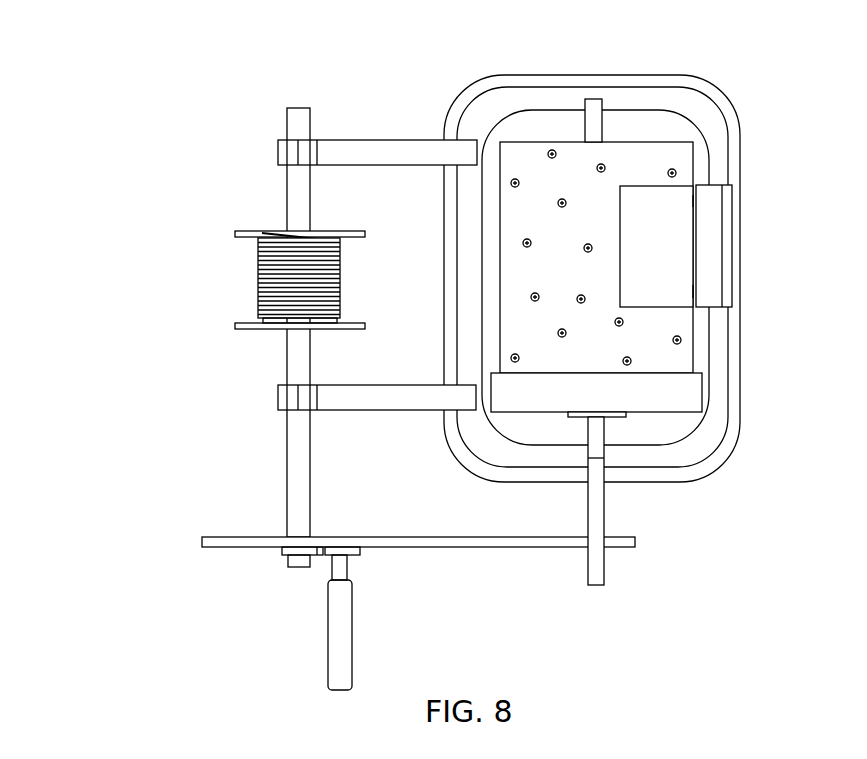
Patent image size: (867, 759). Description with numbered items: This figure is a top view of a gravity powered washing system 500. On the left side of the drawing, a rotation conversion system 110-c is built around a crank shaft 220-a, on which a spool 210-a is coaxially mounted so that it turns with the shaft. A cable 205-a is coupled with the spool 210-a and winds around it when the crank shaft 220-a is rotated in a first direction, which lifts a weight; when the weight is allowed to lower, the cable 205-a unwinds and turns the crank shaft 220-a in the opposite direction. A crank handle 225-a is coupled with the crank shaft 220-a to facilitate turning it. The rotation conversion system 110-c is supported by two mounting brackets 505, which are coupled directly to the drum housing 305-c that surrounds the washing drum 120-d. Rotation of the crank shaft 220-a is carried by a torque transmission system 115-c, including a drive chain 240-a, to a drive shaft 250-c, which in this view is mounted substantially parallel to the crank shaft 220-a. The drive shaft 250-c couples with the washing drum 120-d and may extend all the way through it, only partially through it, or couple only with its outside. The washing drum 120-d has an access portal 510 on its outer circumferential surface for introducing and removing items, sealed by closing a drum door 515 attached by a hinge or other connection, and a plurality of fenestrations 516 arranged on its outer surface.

The gravity powered washing system 500 is at (110, 110).
The rotation conversion system 110-c is at (306, 385).
The torque transmission system 115-c is at (454, 544).
The washing drum 120-d is at (635, 213).
The cable 205-a is at (258, 290).
The spool 210-a is at (250, 230).
The crank shaft 220-a is at (287, 123).
The crank handle 225-a is at (328, 675).
The drive chain 240-a is at (452, 547).
The drive shaft 250-c is at (604, 568).
The drum housing 305-c is at (728, 88).
The mounting brackets 505 is at (355, 140).
The access portal 510 is at (665, 210).
The drum door 515 is at (715, 265).
The fenestrations 516 is at (549, 151).